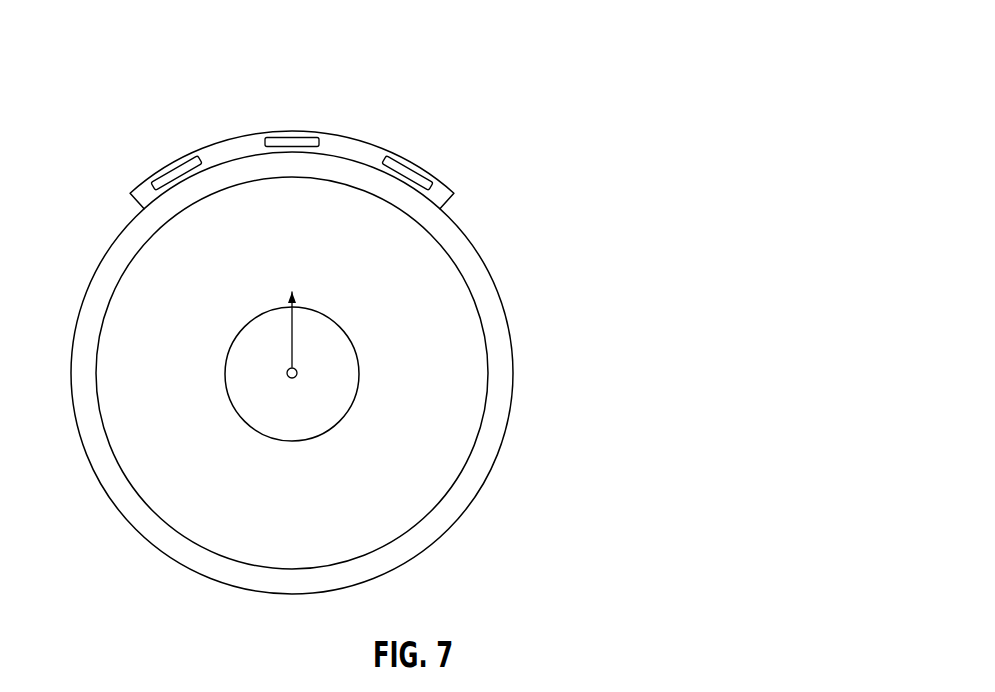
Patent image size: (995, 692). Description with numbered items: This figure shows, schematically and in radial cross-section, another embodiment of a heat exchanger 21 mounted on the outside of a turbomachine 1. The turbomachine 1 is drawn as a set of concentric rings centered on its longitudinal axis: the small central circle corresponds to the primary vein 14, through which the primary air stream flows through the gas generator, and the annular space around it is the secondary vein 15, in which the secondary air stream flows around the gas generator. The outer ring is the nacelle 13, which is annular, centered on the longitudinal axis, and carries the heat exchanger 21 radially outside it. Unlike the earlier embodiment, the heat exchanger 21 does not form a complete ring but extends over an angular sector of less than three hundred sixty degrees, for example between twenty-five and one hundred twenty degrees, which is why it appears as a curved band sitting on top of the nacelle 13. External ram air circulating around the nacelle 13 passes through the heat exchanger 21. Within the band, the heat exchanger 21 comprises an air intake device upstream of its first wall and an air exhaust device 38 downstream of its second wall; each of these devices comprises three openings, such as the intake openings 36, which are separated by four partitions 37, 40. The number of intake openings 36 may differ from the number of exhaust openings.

The turbomachine 1 is at (683, 160).
The nacelle 13 is at (487, 455).
The primary vein 14 is at (292, 348).
The secondary vein 15 is at (292, 373).
The heat exchanger 21 is at (422, 144).
The intake openings 36 is at (506, 190).
The air exhaust device 38 is at (432, 172).
The partitions 37 is at (334, 78).
The partitions 40 is at (348, 152).